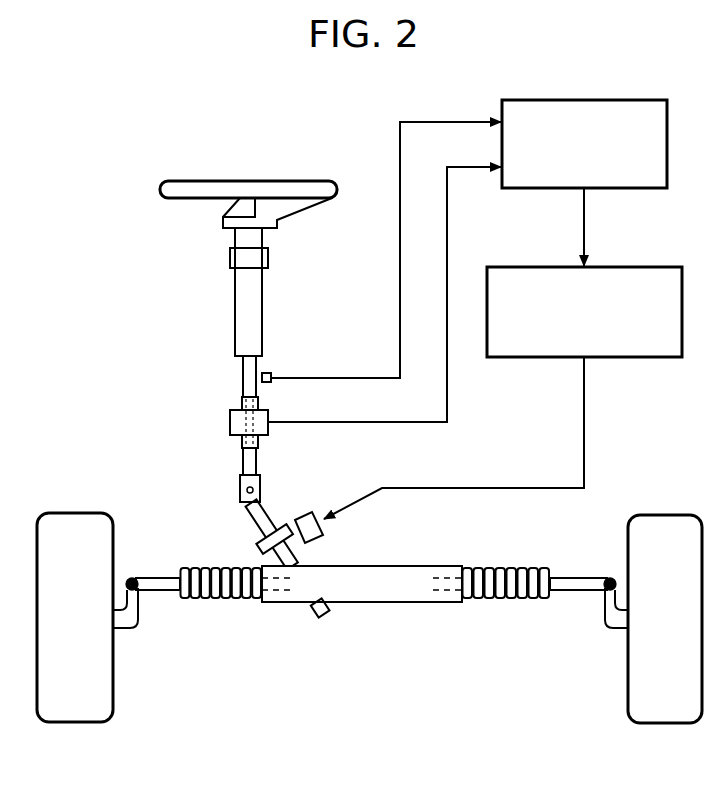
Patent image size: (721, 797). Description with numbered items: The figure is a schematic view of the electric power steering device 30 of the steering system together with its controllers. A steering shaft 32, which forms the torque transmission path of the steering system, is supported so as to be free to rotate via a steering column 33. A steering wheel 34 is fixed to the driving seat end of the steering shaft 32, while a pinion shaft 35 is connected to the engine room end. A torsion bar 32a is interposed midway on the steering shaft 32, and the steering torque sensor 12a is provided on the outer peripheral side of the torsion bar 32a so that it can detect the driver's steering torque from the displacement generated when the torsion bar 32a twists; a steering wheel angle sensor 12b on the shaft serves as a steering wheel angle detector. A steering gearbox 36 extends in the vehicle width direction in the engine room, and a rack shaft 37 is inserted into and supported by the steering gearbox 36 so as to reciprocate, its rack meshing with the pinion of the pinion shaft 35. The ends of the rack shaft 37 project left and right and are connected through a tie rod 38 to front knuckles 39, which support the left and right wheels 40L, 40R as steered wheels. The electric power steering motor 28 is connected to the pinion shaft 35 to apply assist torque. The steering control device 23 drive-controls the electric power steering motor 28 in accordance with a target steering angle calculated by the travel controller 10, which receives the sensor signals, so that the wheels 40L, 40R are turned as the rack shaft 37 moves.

The travel controller 10 is at (627, 100).
The steering control device 23 is at (618, 267).
The electric power steering device 30 is at (76, 188).
The steering wheel 34 is at (248, 181).
The steering column 33 is at (235, 305).
The steering shaft 32 is at (243, 378).
The steering wheel angle sensor 12b is at (271, 373).
The torsion bar 32a is at (222, 422).
The steering torque sensor 12a is at (268, 418).
The pinion shaft 35 is at (253, 522).
The electric power steering motor 28 is at (302, 513).
The steering gearbox 36 is at (365, 602).
The rack shaft 37 is at (447, 575).
The tie rod 38 is at (163, 592).
The front knuckle 39 is at (122, 629).
The right wheel 40R is at (77, 723).
The left wheel 40L is at (665, 724).